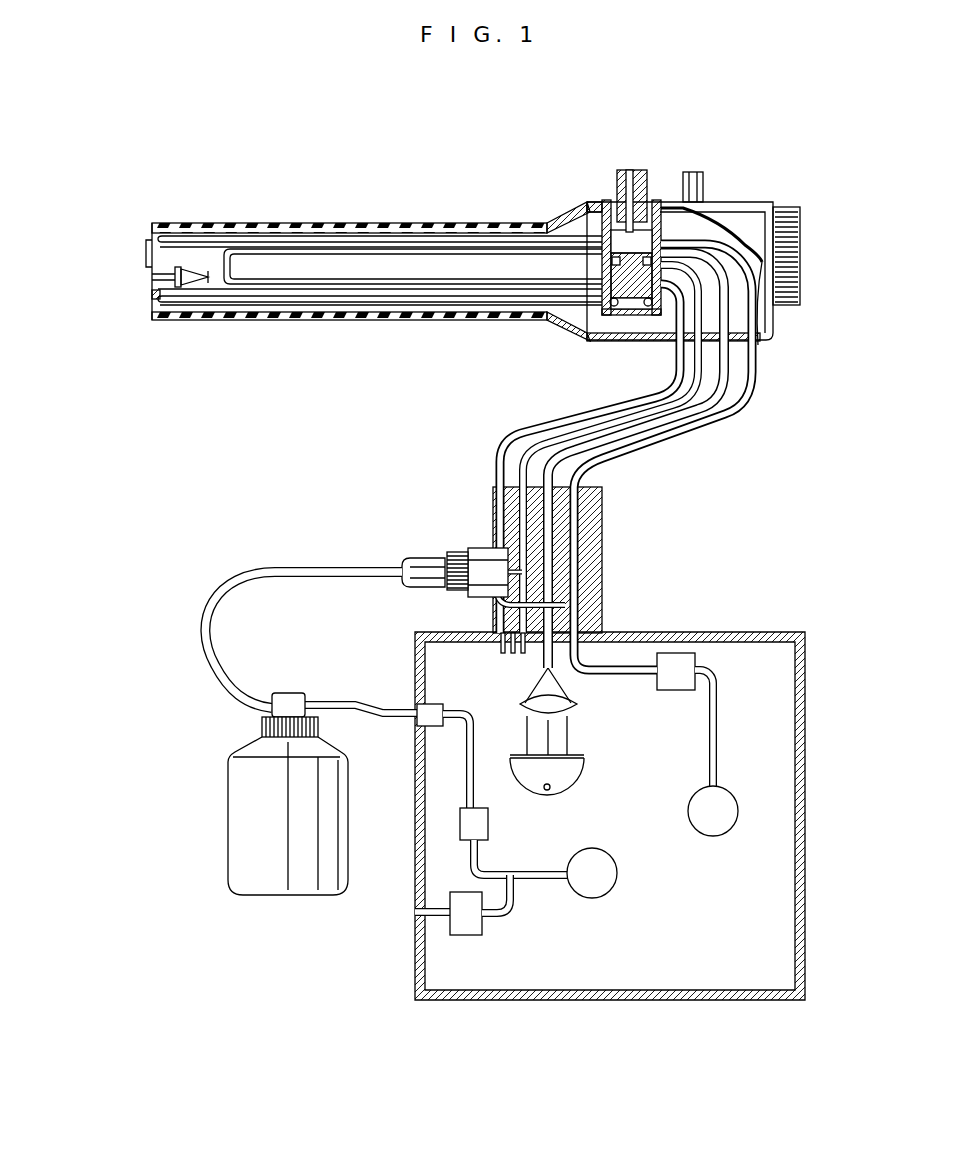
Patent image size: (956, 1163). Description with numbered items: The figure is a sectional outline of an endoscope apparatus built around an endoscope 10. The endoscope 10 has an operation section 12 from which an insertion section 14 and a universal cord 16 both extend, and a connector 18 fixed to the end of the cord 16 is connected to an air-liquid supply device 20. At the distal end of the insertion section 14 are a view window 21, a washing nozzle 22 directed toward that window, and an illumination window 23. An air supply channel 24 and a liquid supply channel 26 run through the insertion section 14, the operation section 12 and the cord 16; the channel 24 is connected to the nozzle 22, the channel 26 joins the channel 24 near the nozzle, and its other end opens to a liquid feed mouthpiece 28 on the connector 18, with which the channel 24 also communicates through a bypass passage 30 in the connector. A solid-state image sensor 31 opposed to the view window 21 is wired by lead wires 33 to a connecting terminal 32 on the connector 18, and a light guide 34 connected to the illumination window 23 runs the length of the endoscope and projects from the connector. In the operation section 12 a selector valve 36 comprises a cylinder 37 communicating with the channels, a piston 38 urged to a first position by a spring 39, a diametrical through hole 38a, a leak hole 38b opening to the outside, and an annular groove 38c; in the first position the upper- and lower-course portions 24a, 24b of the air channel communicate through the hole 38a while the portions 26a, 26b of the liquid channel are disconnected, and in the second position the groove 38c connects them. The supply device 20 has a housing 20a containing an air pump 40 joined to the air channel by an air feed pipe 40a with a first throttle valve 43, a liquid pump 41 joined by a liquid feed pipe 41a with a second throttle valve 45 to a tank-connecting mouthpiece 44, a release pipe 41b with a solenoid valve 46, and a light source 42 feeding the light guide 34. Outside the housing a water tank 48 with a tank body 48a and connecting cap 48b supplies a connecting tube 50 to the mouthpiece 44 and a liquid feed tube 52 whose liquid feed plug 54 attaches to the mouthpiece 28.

The endoscope 10 is at (464, 390).
The operation section 12 is at (673, 242).
The insertion section 14 is at (345, 223).
The universal cord 16 is at (634, 457).
The connector 18 is at (605, 565).
The air-liquid supply device 20 is at (557, 794).
The housing 20a is at (640, 1000).
The view window 21 is at (152, 278).
The washing nozzle 22 is at (148, 244).
The illumination window 23 is at (155, 300).
The air supply channel 24 is at (462, 238).
The upper-course portion of air supply channel 24a is at (713, 430).
The lower-course portion of air supply channel 24b is at (280, 250).
The liquid supply channel 26 is at (450, 296).
The upper-course portion of liquid supply channel 26a is at (572, 430).
The lower-course portion of liquid supply channel 26b is at (372, 296).
The liquid feed mouthpiece 28 is at (480, 552).
The bypass passage 30 is at (508, 598).
The solid-state image sensor 31 is at (177, 266).
The connecting terminal 32 is at (503, 652).
The lead wires 33 is at (190, 288).
The light guide 34 is at (300, 305).
The selector valve 36 is at (585, 200).
The cylinder 37 is at (598, 262).
The piston 38 is at (651, 171).
The diametrical through hole 38a is at (700, 222).
The leak hole 38b is at (630, 170).
The annular groove 38c is at (760, 345).
The spring 39 is at (635, 314).
The air pump 40 is at (730, 826).
The air feed pipe 40a is at (724, 726).
The liquid pump 41 is at (612, 888).
The liquid feed pipe 41a is at (480, 862).
The release pipe 41b is at (512, 915).
The light source 42 is at (590, 752).
The first throttle valve 43 is at (696, 668).
The tank-connecting mouthpiece 44 is at (420, 706).
The second throttle valve 45 is at (463, 838).
The solenoid valve 46 is at (474, 935).
The water tank 48 is at (253, 797).
The tank body 48a is at (236, 818).
The connecting cap 48b is at (290, 693).
The connecting tube 50 is at (388, 714).
The liquid feed tube 52 is at (225, 602).
The liquid feed plug 54 is at (420, 568).